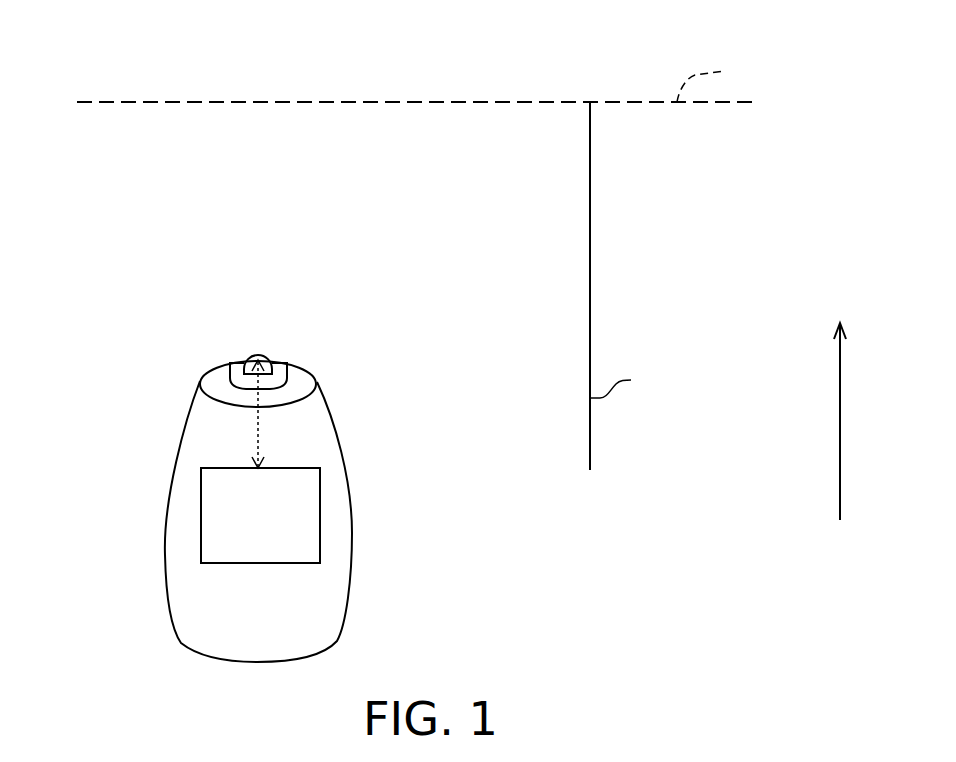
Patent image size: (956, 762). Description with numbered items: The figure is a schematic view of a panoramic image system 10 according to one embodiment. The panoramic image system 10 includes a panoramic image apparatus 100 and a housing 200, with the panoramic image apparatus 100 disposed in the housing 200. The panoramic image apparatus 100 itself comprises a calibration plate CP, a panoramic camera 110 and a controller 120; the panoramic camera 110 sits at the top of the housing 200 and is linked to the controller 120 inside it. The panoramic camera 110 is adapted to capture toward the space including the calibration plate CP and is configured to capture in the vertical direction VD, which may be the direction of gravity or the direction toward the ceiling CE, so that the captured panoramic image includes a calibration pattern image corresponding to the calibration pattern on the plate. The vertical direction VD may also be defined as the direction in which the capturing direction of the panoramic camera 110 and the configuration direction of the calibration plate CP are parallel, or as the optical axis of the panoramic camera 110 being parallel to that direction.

The panoramic image system 10 is at (704, 656).
The panoramic image apparatus 100 is at (44, 0).
The panoramic camera 110 is at (247, 363).
The controller 120 is at (200, 515).
The housing 200 is at (166, 592).